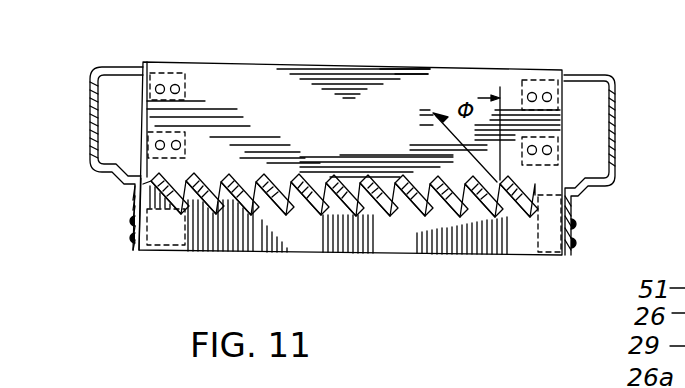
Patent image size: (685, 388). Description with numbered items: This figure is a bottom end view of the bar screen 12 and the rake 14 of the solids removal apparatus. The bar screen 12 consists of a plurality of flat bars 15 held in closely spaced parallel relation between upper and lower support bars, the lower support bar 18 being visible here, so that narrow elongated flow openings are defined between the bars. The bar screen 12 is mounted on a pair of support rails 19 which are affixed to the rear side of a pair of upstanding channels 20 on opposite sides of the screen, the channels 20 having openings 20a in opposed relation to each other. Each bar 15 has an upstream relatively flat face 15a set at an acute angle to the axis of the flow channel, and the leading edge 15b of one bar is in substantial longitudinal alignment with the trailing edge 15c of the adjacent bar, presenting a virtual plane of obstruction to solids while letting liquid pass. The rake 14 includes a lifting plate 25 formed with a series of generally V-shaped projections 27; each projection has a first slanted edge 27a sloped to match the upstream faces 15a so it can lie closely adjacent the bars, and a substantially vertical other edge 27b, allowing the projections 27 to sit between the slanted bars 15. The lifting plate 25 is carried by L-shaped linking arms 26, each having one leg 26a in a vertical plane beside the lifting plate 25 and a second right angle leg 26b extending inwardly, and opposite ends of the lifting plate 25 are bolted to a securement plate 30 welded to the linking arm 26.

The bar screen 12 is at (461, 259).
The rake 14 is at (345, 63).
The lifting plate 25 is at (397, 64).
The upstanding channels 20 is at (90, 120).
The openings 20a is at (110, 90).
The support rails 19 is at (133, 213).
The linking arms 26 is at (143, 88).
The second right angle leg 26b is at (172, 70).
The securement plate 30 is at (187, 78).
The leg 26a is at (143, 133).
The flat bars 15 is at (215, 178).
The upstream face 15a is at (300, 180).
The leading edge 15b is at (253, 183).
The trailing edge 15c is at (288, 180).
The projections 27 is at (343, 187).
The first slanted edge 27a is at (414, 276).
The other edge 27b is at (225, 140).
The lower support bar 18 is at (383, 248).